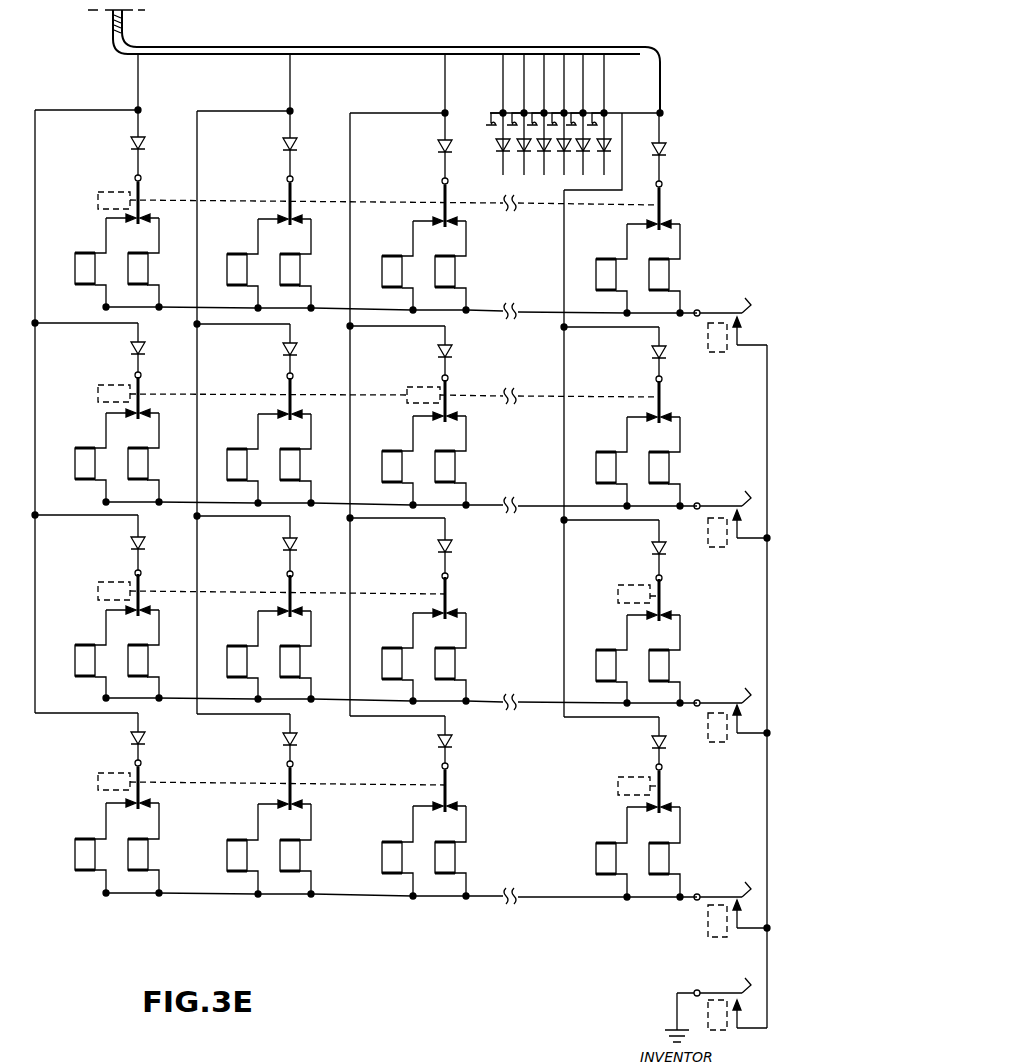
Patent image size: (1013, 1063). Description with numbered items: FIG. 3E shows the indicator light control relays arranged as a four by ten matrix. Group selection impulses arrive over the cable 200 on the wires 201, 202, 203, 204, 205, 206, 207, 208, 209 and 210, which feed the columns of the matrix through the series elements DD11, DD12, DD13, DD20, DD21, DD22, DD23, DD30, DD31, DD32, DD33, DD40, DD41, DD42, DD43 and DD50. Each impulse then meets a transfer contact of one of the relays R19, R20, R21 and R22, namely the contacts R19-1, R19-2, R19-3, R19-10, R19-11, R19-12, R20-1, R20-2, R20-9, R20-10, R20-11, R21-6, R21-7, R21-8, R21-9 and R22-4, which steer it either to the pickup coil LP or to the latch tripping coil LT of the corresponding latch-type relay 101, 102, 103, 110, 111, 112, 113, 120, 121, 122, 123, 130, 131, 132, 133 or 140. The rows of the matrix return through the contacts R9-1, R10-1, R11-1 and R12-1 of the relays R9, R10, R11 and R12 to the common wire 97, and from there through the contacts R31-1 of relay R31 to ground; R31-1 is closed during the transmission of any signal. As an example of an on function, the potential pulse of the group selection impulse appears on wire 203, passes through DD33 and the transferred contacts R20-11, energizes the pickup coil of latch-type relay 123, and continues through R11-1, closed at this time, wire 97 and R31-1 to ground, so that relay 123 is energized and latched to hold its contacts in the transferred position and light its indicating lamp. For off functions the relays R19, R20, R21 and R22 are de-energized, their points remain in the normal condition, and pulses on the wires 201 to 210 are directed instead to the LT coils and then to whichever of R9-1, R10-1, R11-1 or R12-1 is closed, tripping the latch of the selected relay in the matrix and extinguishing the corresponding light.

The wire 97 is at (767, 638).
The multiconductor cable 200 is at (131, 50).
The wire 201 is at (141, 102).
The wire 202 is at (293, 102).
The wire 203 is at (444, 103).
The wire 204 is at (503, 80).
The wire 205 is at (524, 98).
The wire 206 is at (544, 66).
The wire 207 is at (564, 66).
The wire 208 is at (583, 68).
The wire 209 is at (604, 96).
The wire 210 is at (660, 102).
The lamp unit 101 is at (115, 210).
The lamp unit 102 is at (275, 210).
The lamp unit 103 is at (428, 213).
The lamp unit 110 is at (645, 216).
The lamp unit 111 is at (119, 414).
The lamp unit 112 is at (277, 412).
The lamp unit 113 is at (428, 417).
The lamp unit 120 is at (627, 418).
The lamp unit 121 is at (116, 608).
The lamp unit 122 is at (277, 609).
The latch-type relay 123 is at (435, 611).
The lamp unit 130 is at (647, 613).
The lamp unit 131 is at (117, 804).
The lamp unit 132 is at (273, 805).
The lamp unit 133 is at (426, 807).
The lamp unit 140 is at (641, 808).
The diode DD11 is at (143, 146).
The diode DD12 is at (294, 140).
The diode DD13 is at (446, 142).
The diode DD20 is at (662, 150).
The diode DD21 is at (144, 351).
The diode DD22 is at (294, 348).
The diode DD23 is at (453, 350).
The diode DD30 is at (652, 354).
The diode DD31 is at (131, 546).
The diode DD32 is at (290, 544).
The diode DD33 is at (455, 548).
The diode DD40 is at (652, 554).
The diode DD41 is at (142, 740).
The diode DD42 is at (290, 739).
The diode DD43 is at (445, 741).
The diode DD50 is at (652, 748).
The relay operating coil R19 is at (98, 193).
The relay operating coil R20 is at (407, 392).
The relay operating coil R21 is at (618, 594).
The relay operating coil R22 is at (618, 785).
The relay contact R19-1 is at (140, 212).
The relay contact R19-2 is at (292, 213).
The relay contact R19-3 is at (447, 215).
The relay contact R19-10 is at (661, 218).
The relay contact R19-11 is at (140, 408).
The relay contact R19-12 is at (292, 409).
The relay contact R20-1 is at (447, 411).
The relay contact R20-2 is at (653, 402).
The relay contact R20-9 is at (140, 605).
The relay contact R20-10 is at (292, 606).
The contacts of relay R20 R20-11 is at (448, 608).
The relay contact R21-6 is at (662, 610).
The relay contact R21-7 is at (140, 798).
The relay contact R21-8 is at (292, 799).
The relay contact R21-9 is at (447, 801).
The relay contact R22-4 is at (662, 802).
The relay R9 is at (708, 342).
The relay R10 is at (708, 533).
The relay R11 is at (708, 728).
The relay R12 is at (708, 920).
The relay R31 is at (712, 1031).
The contacts of relay R9 R9-1 is at (730, 316).
The contacts of relay R10 R10-1 is at (732, 512).
The contacts of relay R11 R11-1 is at (732, 708).
The contacts of relay R12 R12-1 is at (732, 901).
The contacts of relay R31 R31-1 is at (716, 1004).